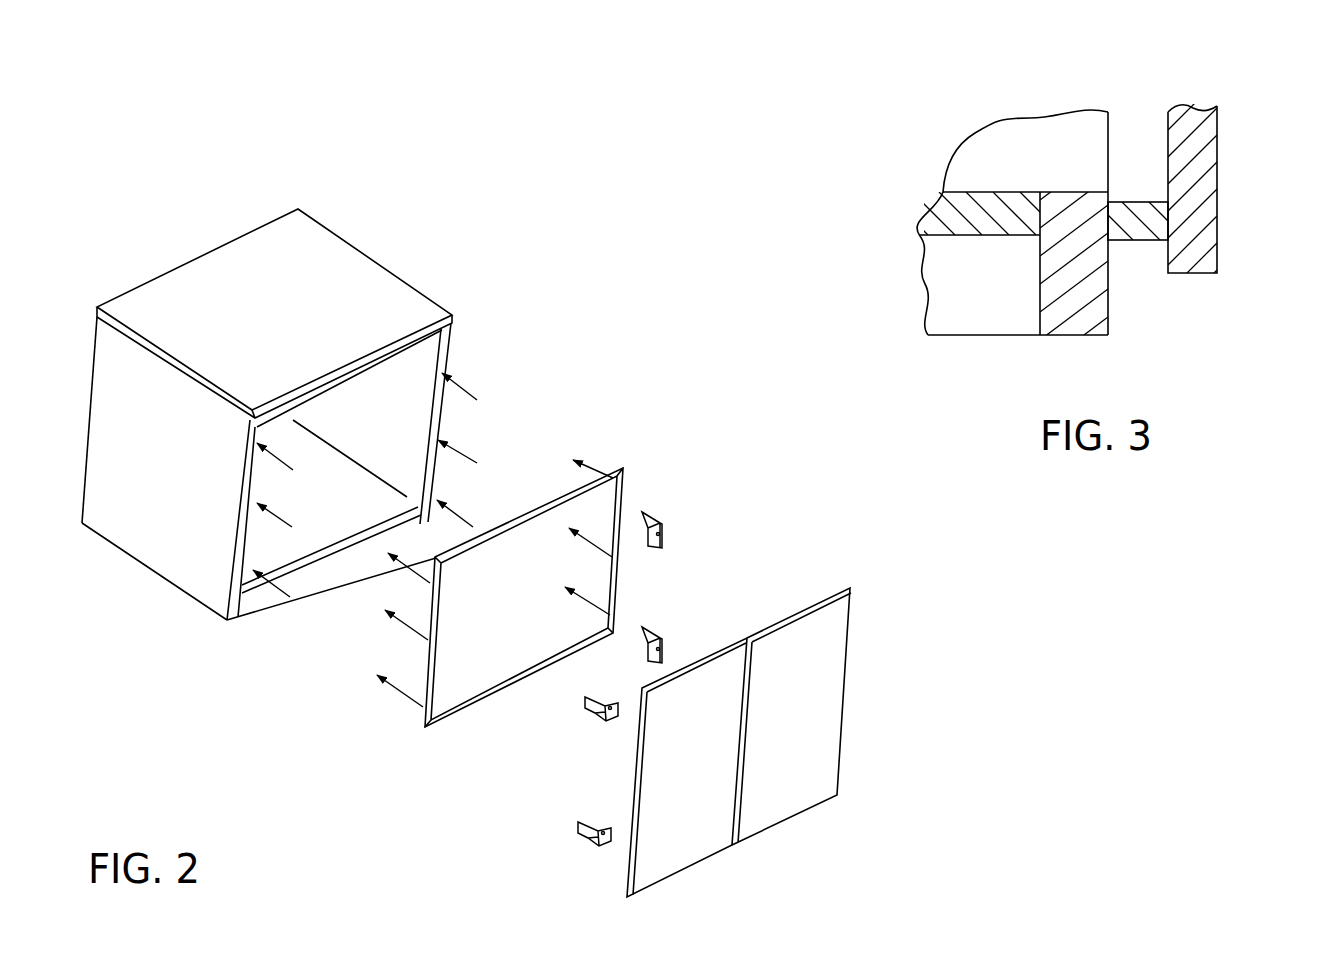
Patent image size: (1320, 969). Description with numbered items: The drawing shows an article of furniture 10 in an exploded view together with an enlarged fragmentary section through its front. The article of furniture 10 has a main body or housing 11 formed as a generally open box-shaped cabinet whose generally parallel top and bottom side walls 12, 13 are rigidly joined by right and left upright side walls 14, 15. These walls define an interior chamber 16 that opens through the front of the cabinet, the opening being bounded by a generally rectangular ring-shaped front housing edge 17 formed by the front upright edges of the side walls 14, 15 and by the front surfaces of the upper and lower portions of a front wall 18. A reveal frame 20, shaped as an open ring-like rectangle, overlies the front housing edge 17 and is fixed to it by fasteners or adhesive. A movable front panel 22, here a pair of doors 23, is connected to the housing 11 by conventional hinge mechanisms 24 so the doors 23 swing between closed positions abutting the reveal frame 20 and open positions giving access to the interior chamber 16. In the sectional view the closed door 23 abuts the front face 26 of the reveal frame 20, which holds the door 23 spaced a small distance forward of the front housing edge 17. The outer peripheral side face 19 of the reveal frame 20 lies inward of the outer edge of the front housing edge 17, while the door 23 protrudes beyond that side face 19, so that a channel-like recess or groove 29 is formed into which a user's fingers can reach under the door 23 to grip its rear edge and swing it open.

In FIG. 2, the article of furniture 10 is at (548, 392).
In FIG. 2, the main body or housing 11 is at (150, 571).
In FIG. 2, the top side wall 12 is at (305, 255).
In FIG. 2, the bottom side wall 13 is at (378, 508).
In FIG. 3, the bottom side wall 13 is at (1007, 222).
In FIG. 2, the right upright side wall 14 is at (127, 413).
In FIG. 2, the left upright side wall 15 is at (417, 363).
In FIG. 2, the interior chamber 16 is at (330, 410).
In FIG. 2, the front housing edge 17 is at (237, 543).
In FIG. 3, the front housing edge 17 is at (1110, 318).
In FIG. 2, the front wall 18 is at (300, 577).
In FIG. 3, the front wall 18 is at (1067, 300).
In FIG. 3, the outer peripheral side face 19 is at (1147, 243).
In FIG. 2, the reveal frame 20 is at (421, 731).
In FIG. 3, the reveal frame 20 is at (1132, 207).
In FIG. 2, the movable front panel 22 is at (704, 754).
In FIG. 2, the door 23 is at (787, 807).
In FIG. 3, the door 23 is at (1200, 172).
In FIG. 2, the hinge mechanism 24 is at (652, 515).
In FIG. 3, the front face 26 is at (1170, 217).
In FIG. 3, the channel-like recess or groove 29 is at (1138, 267).